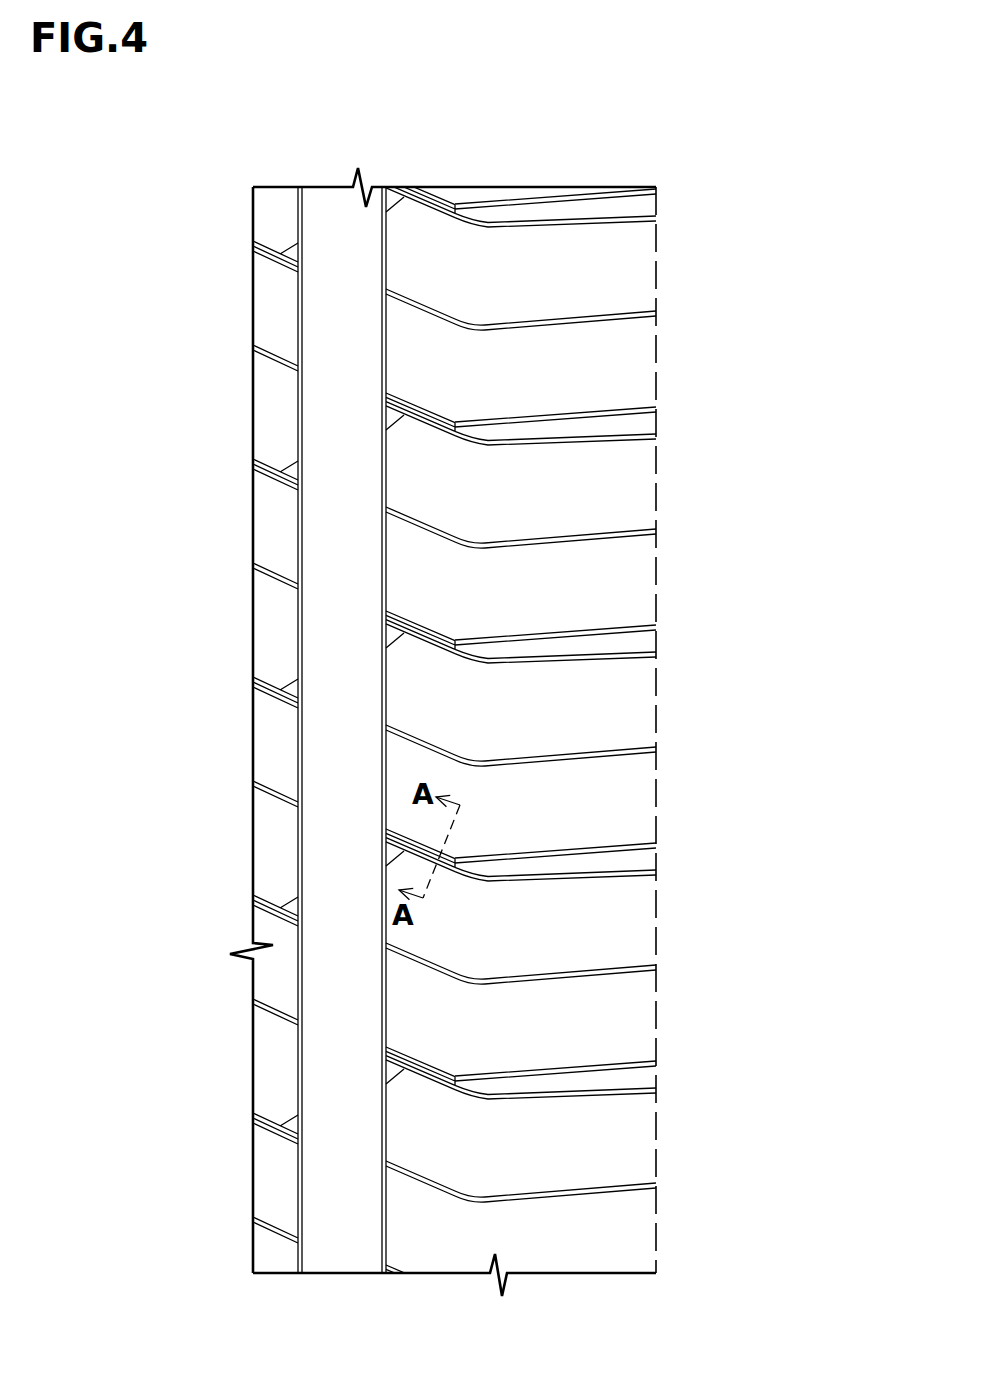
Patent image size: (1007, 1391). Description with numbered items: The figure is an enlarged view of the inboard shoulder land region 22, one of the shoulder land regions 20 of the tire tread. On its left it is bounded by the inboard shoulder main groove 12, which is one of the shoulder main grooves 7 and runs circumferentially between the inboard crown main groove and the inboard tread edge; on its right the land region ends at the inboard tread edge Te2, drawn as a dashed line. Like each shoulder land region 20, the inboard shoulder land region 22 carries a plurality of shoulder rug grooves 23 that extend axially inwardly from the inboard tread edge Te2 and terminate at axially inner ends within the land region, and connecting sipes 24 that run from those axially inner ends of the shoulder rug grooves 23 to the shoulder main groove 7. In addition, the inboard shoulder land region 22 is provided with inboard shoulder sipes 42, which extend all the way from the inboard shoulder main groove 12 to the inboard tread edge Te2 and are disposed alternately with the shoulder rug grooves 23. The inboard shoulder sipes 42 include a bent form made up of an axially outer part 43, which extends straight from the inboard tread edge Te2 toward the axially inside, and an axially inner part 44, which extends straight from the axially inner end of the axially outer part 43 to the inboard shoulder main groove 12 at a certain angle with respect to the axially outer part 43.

The shoulder main groove 7 is at (346, 685).
The inboard shoulder main groove 12 is at (340, 246).
The shoulder land region 20 is at (486, 703).
The inboard shoulder land region 22 is at (486, 703).
The inboard tread edge Te2 is at (664, 216).
The connecting sipe 24 is at (420, 415).
The shoulder rug groove 23 is at (565, 428).
The inboard shoulder sipe 42 is at (604, 745).
The axially outer part 43 is at (576, 537).
The axially inner part 44 is at (421, 526).